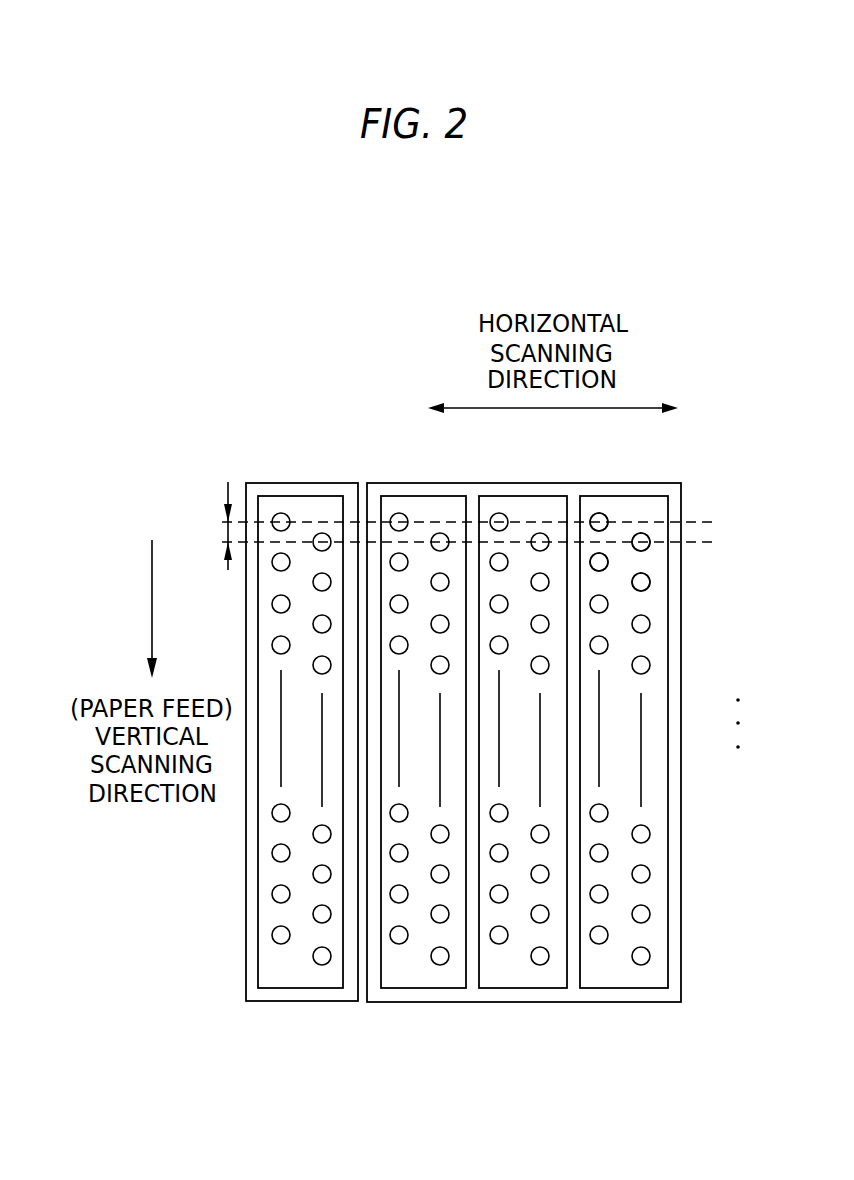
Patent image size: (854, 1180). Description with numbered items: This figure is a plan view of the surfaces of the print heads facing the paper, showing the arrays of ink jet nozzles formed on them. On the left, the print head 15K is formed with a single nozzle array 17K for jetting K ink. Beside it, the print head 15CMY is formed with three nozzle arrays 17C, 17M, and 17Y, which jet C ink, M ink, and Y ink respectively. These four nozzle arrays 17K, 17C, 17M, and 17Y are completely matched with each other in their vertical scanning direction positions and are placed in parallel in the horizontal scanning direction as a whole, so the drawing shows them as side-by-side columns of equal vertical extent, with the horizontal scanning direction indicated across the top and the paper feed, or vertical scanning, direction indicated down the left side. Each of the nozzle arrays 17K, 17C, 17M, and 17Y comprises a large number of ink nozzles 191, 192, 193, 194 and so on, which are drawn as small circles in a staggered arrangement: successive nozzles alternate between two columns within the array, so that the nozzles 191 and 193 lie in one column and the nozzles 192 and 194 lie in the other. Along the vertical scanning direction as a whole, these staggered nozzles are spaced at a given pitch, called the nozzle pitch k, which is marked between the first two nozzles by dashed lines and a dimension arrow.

The print head 15K is at (280, 483).
The nozzle array 17K is at (338, 496).
The print head 15CMY is at (681, 483).
The nozzle array 17C is at (424, 496).
The nozzle array 17M is at (524, 496).
The nozzle array 17Y is at (627, 496).
The ink nozzle 191 is at (608, 520).
The ink nozzle 192 is at (650, 546).
The ink nozzle 193 is at (609, 561).
The ink nozzle 194 is at (650, 586).
The nozzle pitch k is at (228, 531).